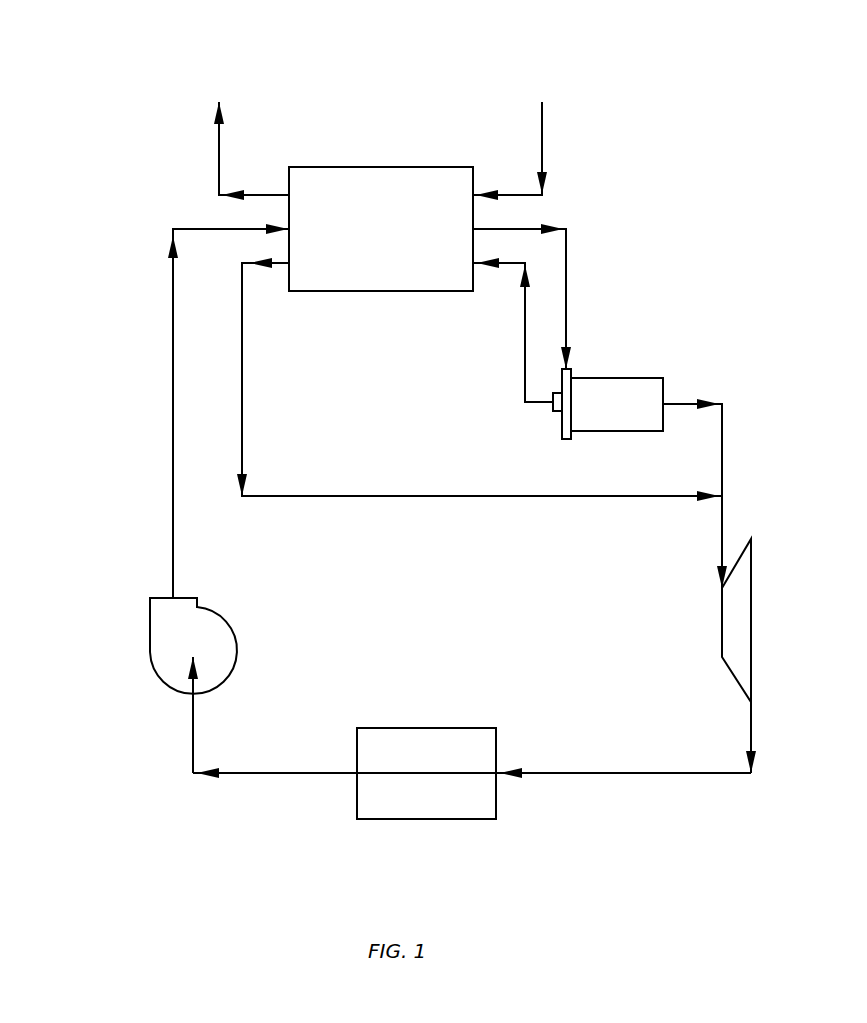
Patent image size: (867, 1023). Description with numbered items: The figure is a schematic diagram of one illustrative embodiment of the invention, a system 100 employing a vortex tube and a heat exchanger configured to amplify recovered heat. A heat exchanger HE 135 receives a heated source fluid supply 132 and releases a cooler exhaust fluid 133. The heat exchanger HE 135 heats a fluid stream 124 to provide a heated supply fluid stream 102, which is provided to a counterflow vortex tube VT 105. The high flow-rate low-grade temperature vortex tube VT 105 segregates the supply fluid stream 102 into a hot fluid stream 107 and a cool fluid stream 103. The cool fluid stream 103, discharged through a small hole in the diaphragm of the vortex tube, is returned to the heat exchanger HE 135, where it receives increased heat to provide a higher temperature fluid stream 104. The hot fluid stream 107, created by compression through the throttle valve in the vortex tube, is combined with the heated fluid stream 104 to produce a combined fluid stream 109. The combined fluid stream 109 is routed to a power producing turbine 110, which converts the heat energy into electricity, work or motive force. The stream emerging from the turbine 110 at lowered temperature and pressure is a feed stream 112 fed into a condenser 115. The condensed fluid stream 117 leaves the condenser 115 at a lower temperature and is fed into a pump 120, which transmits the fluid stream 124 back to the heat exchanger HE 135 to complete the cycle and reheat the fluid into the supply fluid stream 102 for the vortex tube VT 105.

The system 100 is at (650, 74).
The supply fluid stream 102 is at (566, 298).
The cool fluid stream 103 is at (525, 333).
The heated fluid stream 104 is at (482, 496).
The vortex tube 105 is at (618, 378).
The hot fluid stream 107 is at (722, 437).
The combined fluid stream 109 is at (722, 533).
The turbine 110 is at (751, 622).
The feed stream 112 is at (622, 775).
The condenser 115 is at (427, 819).
The condensed fluid stream 117 is at (193, 735).
The pump 120 is at (150, 643).
The fluid stream 124 is at (173, 413).
The heated source fluid supply 132 is at (542, 148).
The cooler exhaust fluid 133 is at (219, 148).
The heat exchanger 135 is at (382, 167).